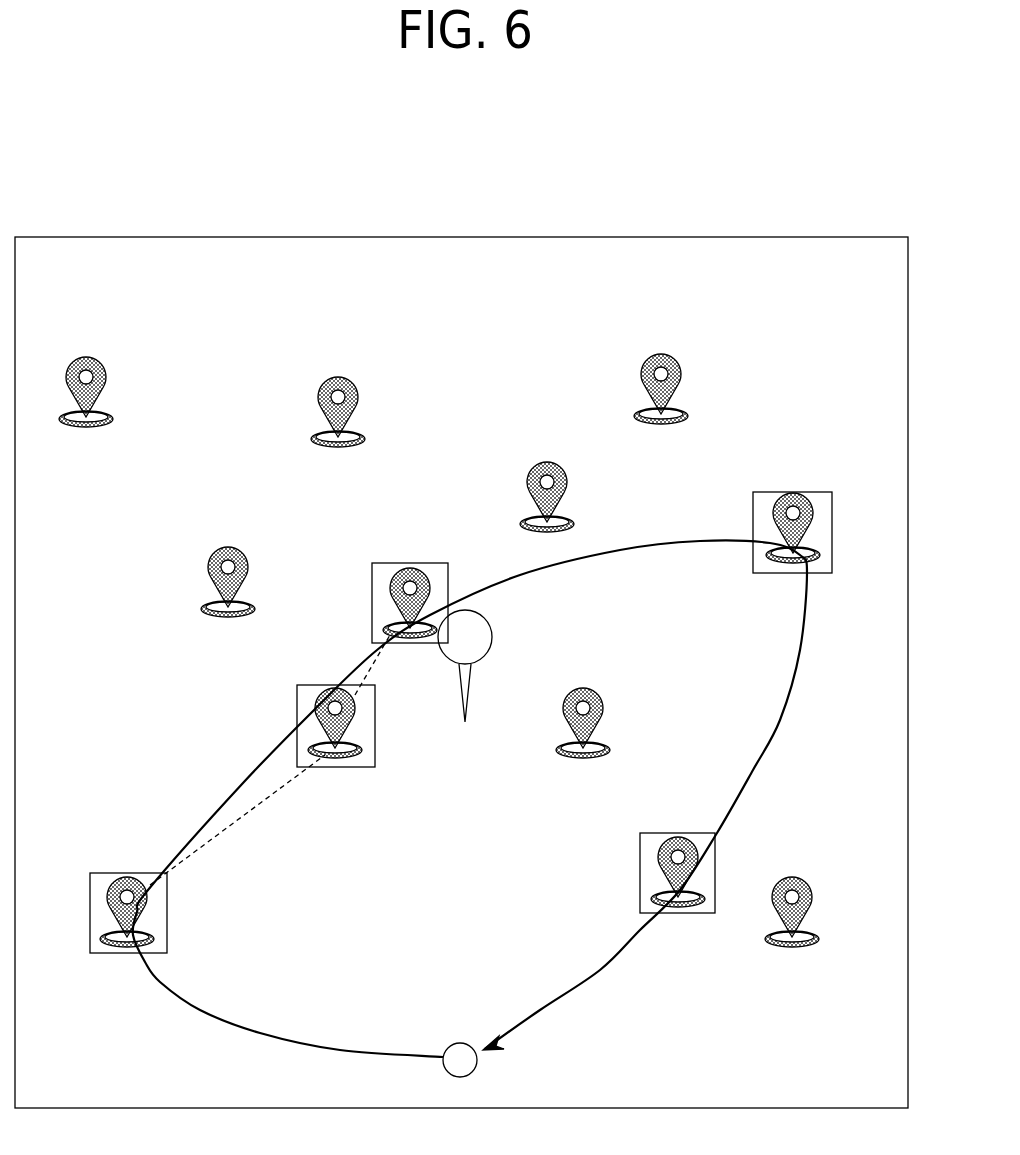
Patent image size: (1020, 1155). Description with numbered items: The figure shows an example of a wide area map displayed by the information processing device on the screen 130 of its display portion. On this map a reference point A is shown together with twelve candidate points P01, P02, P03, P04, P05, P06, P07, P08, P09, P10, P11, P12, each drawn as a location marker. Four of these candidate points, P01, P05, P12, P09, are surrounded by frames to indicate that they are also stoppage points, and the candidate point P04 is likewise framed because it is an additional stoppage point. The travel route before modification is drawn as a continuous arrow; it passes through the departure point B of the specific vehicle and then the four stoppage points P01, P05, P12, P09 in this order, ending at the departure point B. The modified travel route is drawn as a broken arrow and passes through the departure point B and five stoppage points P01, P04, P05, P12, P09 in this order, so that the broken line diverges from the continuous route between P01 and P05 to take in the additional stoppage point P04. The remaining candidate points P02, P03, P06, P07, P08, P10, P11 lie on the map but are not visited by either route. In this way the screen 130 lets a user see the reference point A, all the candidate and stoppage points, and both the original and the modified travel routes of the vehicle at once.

The screen 130 is at (647, 237).
The candidate point P01 is at (110, 873).
The candidate point P02 is at (243, 552).
The candidate point P03 is at (100, 362).
The candidate point P04 is at (345, 768).
The candidate point P05 is at (410, 563).
The candidate point P06 is at (352, 380).
The candidate point P07 is at (598, 692).
The candidate point P08 is at (562, 466).
The candidate point P09 is at (684, 833).
The candidate point P10 is at (675, 357).
The candidate point P11 is at (808, 880).
The candidate point P12 is at (808, 496).
The reference point A is at (492, 637).
The departure point B is at (460, 1043).